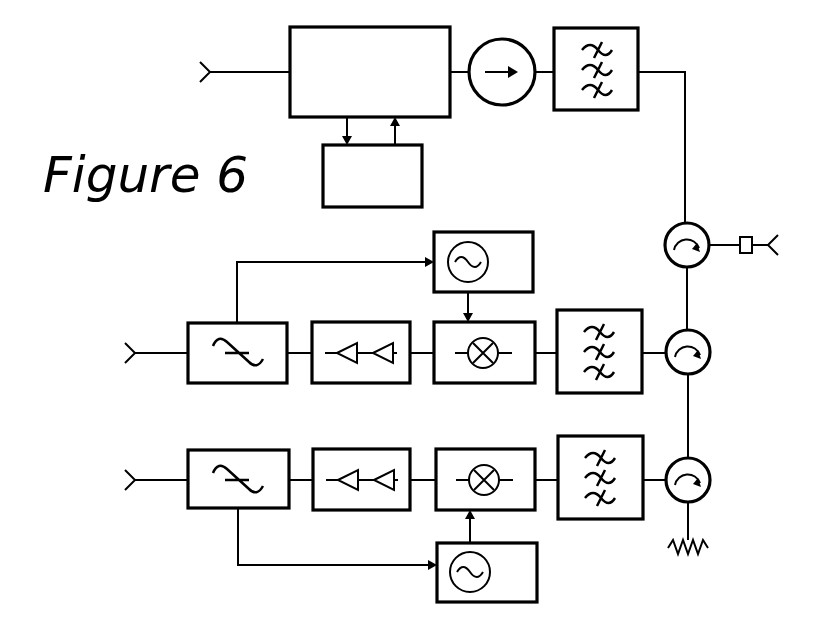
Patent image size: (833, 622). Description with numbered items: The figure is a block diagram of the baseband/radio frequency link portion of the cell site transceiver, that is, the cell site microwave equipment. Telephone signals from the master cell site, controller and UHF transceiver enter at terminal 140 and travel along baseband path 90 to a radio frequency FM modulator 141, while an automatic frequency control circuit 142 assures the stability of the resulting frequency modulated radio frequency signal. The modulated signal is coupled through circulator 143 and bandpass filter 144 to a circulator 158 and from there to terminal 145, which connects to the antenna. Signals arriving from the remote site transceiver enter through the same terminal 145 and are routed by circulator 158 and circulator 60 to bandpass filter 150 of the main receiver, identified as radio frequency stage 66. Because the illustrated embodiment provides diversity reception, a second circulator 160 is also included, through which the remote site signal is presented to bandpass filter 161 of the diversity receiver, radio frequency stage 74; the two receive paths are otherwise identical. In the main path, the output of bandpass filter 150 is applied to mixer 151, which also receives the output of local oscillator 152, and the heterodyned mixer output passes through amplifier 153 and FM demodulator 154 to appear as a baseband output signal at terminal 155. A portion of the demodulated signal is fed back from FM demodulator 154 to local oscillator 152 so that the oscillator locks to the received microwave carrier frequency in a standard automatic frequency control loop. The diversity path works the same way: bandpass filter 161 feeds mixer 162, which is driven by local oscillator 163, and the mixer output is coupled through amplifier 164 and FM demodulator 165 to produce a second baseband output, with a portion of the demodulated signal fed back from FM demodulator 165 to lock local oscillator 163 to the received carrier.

The circulator 60 is at (703, 365).
The radio frequency stage 66 is at (182, 282).
The radio frequency stage 74 is at (173, 534).
The baseband path 90 is at (265, 132).
The terminal 140 is at (201, 95).
The radio frequency FM modulator 141 is at (290, 51).
The automatic frequency control circuit 142 is at (323, 178).
The circulator 143 is at (486, 101).
The bandpass filter 144 is at (556, 96).
The terminal 145 is at (766, 241).
The bandpass filter 150 is at (589, 310).
The mixer 151 is at (526, 322).
The local oscillator 152 is at (468, 232).
The amplifier 153 is at (331, 322).
The FM demodulator 154 is at (255, 388).
The terminal 155 is at (124, 350).
The circulator 158 is at (697, 232).
The second circulator 160 is at (702, 493).
The bandpass filter 161 is at (573, 518).
The mixer 162 is at (461, 452).
The local oscillator 163 is at (437, 556).
The amplifier 164 is at (343, 452).
The FM demodulator 165 is at (228, 452).